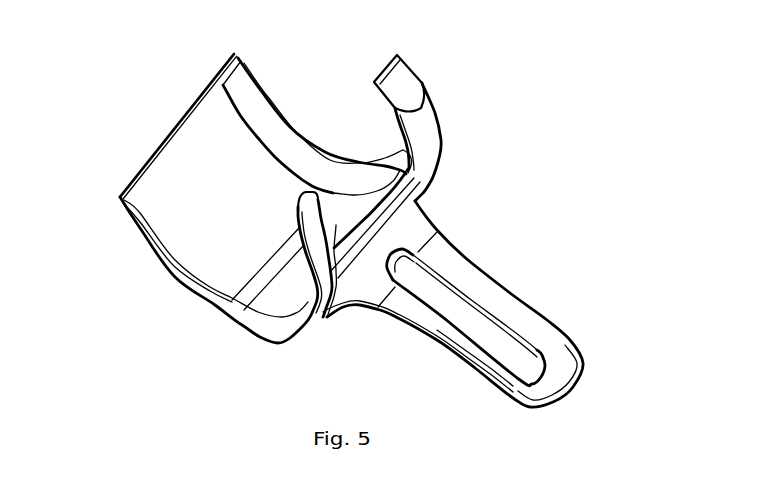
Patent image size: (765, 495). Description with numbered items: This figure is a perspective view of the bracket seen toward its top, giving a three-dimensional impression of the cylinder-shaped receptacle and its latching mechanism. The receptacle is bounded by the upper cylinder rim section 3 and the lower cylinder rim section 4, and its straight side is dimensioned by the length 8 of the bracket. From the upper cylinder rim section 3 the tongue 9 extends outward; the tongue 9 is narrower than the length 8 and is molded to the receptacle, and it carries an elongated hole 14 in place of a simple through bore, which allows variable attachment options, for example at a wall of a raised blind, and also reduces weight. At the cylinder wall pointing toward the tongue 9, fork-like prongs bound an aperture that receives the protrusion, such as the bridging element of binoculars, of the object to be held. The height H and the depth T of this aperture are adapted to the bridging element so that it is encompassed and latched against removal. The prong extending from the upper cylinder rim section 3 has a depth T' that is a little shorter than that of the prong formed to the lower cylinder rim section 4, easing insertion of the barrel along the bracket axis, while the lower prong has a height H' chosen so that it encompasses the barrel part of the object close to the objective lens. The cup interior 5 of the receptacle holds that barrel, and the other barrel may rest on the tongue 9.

The upper cylinder rim section 3 is at (167, 267).
The lower cylinder rim section 4 is at (242, 58).
The inner wall of cup 5 is at (280, 137).
The length of the bracket 8 is at (103, 183).
The tongue 9 is at (480, 282).
The elongated hole 14 is at (510, 353).
The depth of the aperture T is at (423, 83).
The depth of the upper prong T' is at (329, 254).
The height of the aperture H is at (407, 180).
The height of the lower prong H' is at (380, 145).